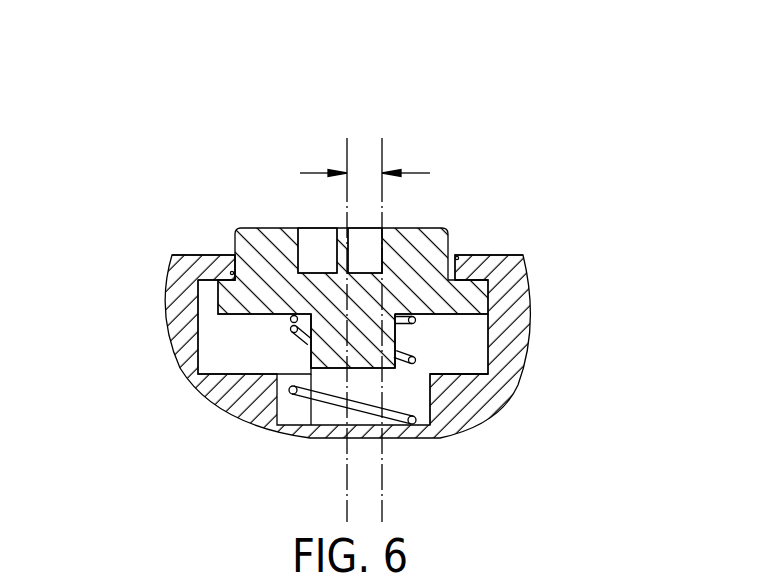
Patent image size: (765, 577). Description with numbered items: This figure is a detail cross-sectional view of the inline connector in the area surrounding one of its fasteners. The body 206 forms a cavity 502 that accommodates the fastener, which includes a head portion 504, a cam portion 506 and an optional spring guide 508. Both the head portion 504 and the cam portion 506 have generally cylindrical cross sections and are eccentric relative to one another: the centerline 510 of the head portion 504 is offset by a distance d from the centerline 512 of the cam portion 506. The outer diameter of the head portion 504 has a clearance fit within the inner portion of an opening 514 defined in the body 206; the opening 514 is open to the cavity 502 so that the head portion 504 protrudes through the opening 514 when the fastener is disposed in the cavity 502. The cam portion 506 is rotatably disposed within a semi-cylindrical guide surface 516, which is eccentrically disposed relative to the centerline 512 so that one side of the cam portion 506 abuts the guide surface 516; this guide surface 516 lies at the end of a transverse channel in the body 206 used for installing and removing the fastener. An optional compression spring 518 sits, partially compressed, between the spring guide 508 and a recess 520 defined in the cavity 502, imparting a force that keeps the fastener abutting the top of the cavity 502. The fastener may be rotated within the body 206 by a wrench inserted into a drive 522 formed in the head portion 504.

The body 206 is at (202, 270).
The cavity 502 is at (243, 350).
The head portion 504 is at (273, 255).
The cam portion 506 is at (210, 322).
The spring guide 508 is at (373, 352).
The centerline of the head portion 510 is at (343, 147).
The centerline of the cam portion 512 is at (382, 157).
The opening 514 is at (505, 262).
The semi-cylindrical guide surface 516 is at (483, 352).
The spring 518 is at (332, 400).
The recess 520 is at (430, 403).
The drive 522 is at (317, 248).
The offset distance d is at (363, 170).